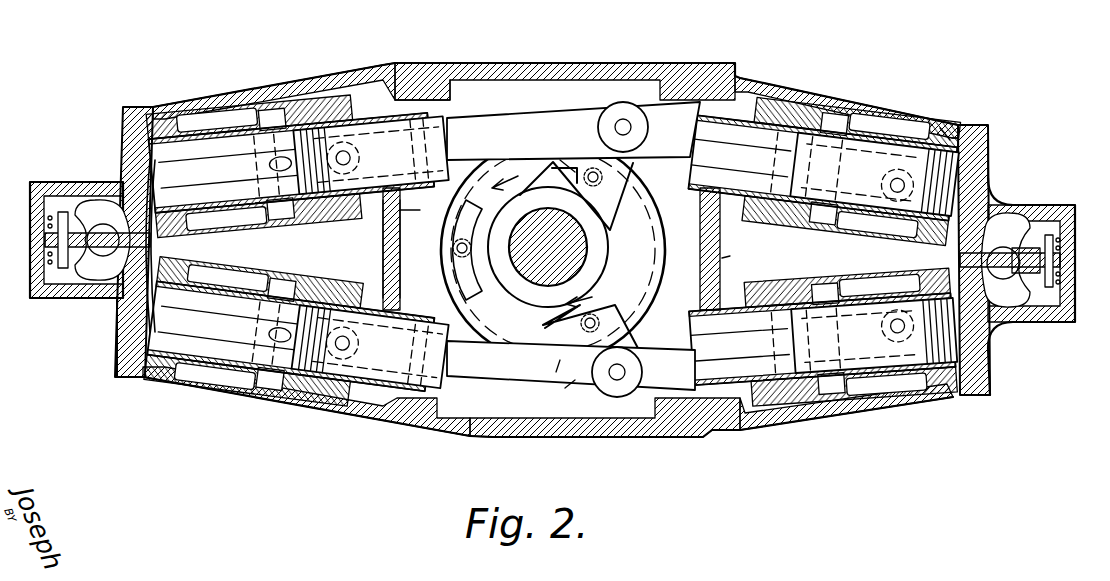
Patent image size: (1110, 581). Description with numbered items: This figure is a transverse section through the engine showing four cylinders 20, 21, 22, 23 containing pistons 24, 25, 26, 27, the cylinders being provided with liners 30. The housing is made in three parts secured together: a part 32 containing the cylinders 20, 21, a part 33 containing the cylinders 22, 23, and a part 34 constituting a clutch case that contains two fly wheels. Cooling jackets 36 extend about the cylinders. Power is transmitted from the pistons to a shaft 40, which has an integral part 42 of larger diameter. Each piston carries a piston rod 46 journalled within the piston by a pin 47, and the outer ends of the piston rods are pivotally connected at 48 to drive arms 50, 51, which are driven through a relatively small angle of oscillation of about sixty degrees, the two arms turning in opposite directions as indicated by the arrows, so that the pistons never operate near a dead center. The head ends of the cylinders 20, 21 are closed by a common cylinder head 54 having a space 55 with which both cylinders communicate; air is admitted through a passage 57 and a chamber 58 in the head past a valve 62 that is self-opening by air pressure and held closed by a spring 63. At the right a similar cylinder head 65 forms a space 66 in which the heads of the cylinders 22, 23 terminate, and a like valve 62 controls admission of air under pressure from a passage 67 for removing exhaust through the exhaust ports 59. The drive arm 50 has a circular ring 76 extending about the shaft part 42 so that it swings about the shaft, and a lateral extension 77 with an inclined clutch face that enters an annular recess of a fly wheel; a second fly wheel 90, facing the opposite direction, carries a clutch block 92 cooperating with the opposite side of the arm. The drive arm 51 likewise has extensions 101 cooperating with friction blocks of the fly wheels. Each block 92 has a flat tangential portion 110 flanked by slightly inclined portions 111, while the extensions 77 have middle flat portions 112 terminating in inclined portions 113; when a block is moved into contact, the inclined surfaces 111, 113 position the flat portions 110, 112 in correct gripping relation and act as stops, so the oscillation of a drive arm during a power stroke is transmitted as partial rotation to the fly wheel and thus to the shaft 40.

The cylinder 20 is at (198, 328).
The cylinder 21 is at (256, 210).
The cylinder 22 is at (775, 180).
The cylinder 23 is at (778, 368).
The piston 24 is at (375, 432).
The piston 25 is at (376, 66).
The piston 26 is at (940, 128).
The piston 27 is at (900, 405).
The liner 30 is at (204, 214).
The housing part 32 is at (243, 82).
The housing part 33 is at (790, 78).
The housing part 34 is at (528, 63).
The cooling jacket 36 is at (205, 104).
The shaft 40 is at (608, 253).
The shaft part 42 is at (520, 302).
The piston rod 46 is at (495, 125).
The pin 47 is at (346, 152).
The pivotal connection 48 is at (632, 108).
The drive arm 50 is at (640, 308).
The drive arm 51 is at (642, 165).
The cylinder head 54 is at (127, 107).
The space 55 is at (118, 318).
The passage 57 is at (95, 298).
The chamber 58 is at (110, 190).
The exhaust port 59 is at (274, 112).
The valve 62 is at (82, 205).
The spring 63 is at (40, 300).
The cylinder head 65 is at (988, 130).
The space 66 is at (998, 174).
The passage 67 is at (1008, 325).
The circular band or ring 76 is at (472, 300).
The lateral extension 77 is at (595, 282).
The fly wheel 90 is at (722, 230).
The clutch block 92 is at (395, 213).
The extension 101 is at (560, 165).
The flat portion 110 is at (385, 255).
The inclined portion 111 is at (385, 238).
The flat portion 112 is at (565, 388).
The inclined portion 113 is at (724, 258).